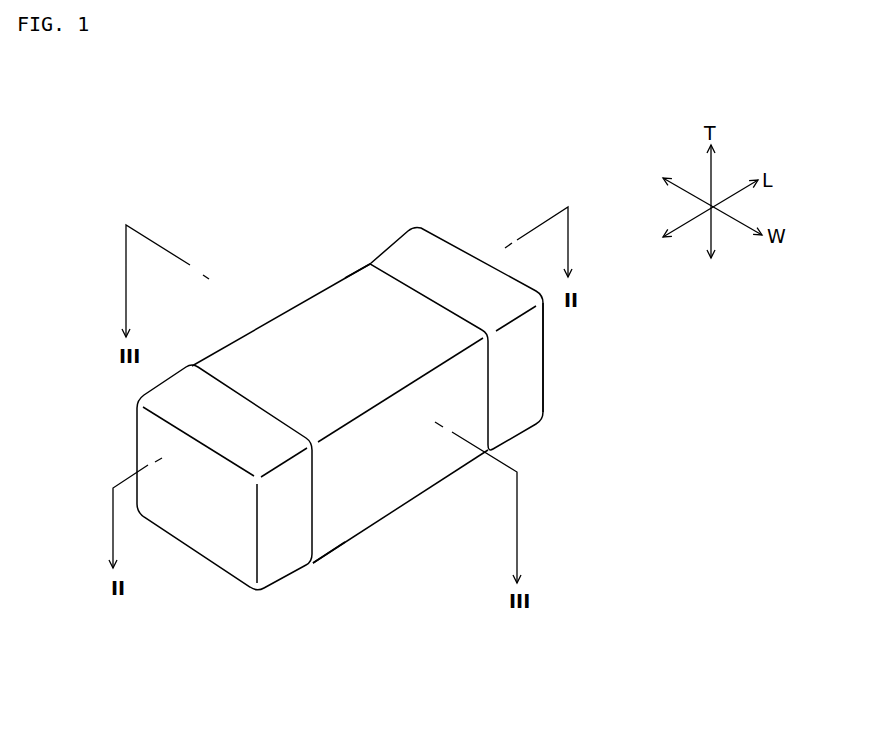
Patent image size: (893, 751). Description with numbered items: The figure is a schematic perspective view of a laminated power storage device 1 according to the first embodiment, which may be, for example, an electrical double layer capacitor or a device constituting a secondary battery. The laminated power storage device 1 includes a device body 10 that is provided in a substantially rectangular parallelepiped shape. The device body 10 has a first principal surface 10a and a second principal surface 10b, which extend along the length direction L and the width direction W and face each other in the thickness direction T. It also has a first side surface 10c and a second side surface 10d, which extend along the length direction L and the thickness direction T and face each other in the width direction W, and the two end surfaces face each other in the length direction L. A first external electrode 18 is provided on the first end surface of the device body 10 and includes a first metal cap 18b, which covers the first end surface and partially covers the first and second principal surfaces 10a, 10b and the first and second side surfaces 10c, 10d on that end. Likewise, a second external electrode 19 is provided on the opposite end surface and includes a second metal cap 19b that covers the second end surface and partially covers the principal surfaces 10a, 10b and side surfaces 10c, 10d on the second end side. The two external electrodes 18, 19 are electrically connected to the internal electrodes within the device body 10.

The laminated power storage device 1 is at (495, 198).
The device body 10 is at (325, 267).
The first principal surface 10a is at (318, 323).
The second principal surface 10b is at (382, 513).
The first side surface 10c is at (355, 274).
The second side surface 10d is at (338, 522).
The first external electrode 18 is at (134, 448).
The first metal cap 18b is at (212, 557).
The second external electrode 19 is at (548, 366).
The second metal cap 19b is at (537, 412).